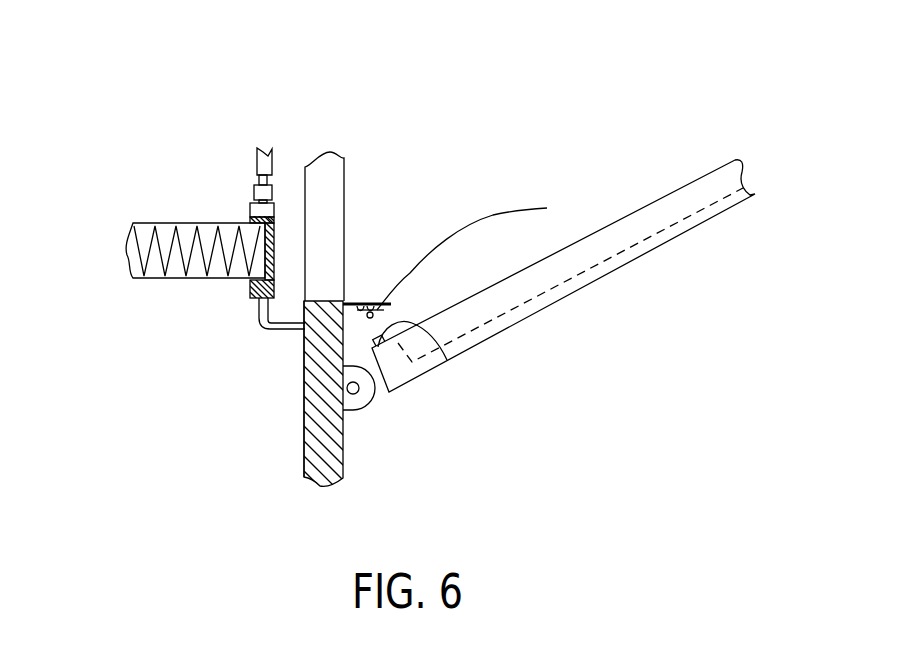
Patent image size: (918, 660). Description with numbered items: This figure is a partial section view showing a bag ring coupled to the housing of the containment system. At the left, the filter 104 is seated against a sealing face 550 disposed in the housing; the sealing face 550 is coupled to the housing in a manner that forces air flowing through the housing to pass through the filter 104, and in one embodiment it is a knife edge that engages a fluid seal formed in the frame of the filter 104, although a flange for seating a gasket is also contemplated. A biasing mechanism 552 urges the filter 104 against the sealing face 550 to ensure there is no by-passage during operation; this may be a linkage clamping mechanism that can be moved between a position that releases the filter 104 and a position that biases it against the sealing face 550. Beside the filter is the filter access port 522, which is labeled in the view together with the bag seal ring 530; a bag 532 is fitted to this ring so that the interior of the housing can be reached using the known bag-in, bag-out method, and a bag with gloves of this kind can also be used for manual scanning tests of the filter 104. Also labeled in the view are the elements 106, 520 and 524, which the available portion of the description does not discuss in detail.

The filter 104 is at (150, 222).
The wall 106 is at (343, 445).
The bag support bar 520 is at (683, 235).
The filter access port 522 is at (325, 195).
The pivot arc 524 is at (447, 360).
The bag seal ring 530 is at (367, 304).
The bag 532 is at (513, 215).
The sealing face 550 is at (259, 313).
The biasing mechanism 552 is at (257, 163).